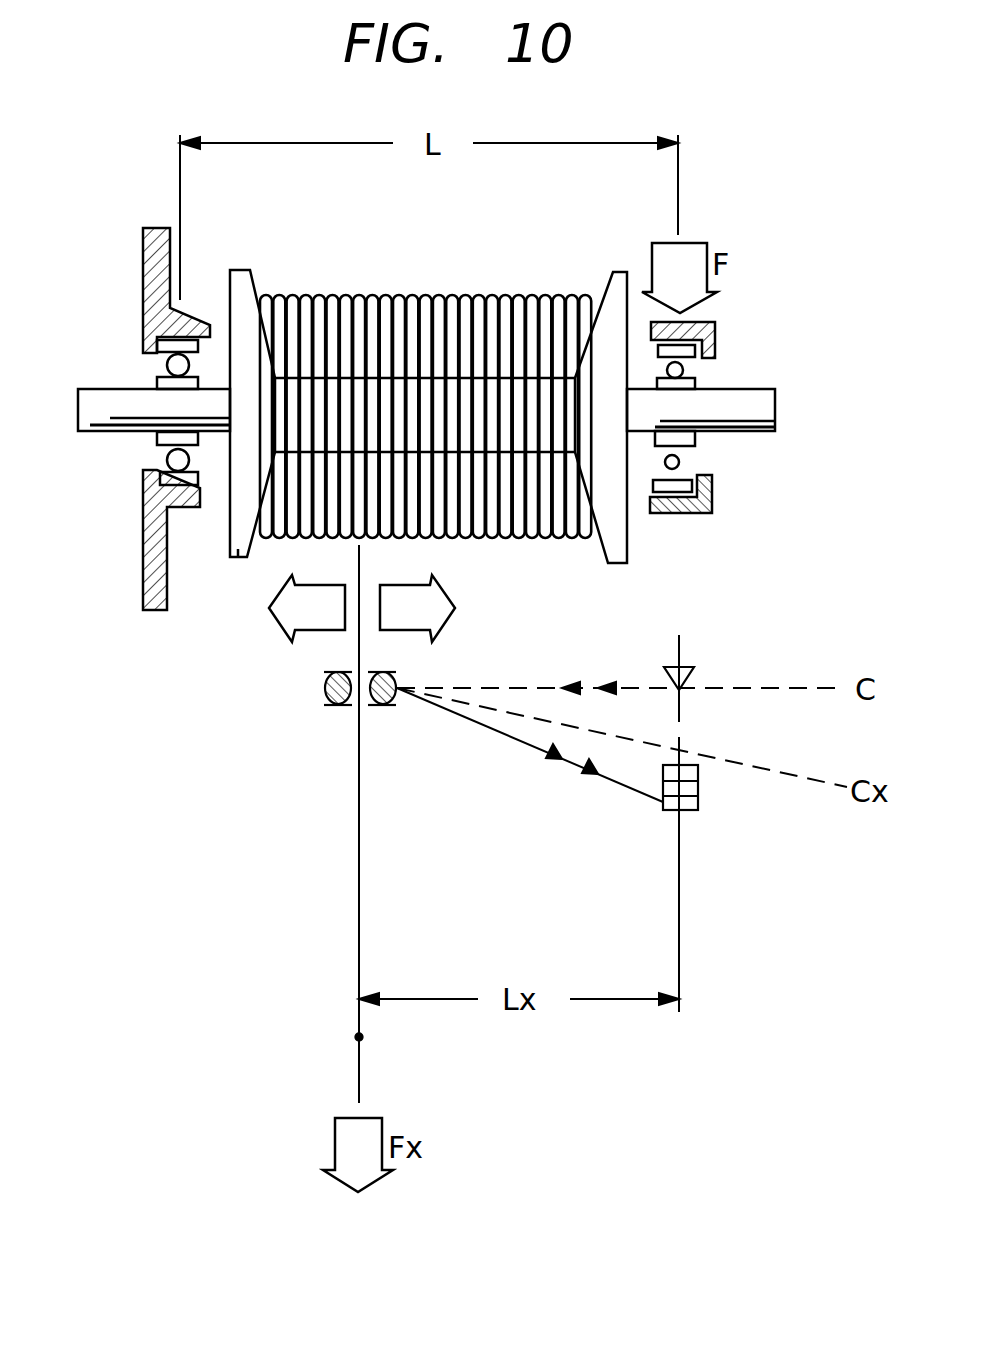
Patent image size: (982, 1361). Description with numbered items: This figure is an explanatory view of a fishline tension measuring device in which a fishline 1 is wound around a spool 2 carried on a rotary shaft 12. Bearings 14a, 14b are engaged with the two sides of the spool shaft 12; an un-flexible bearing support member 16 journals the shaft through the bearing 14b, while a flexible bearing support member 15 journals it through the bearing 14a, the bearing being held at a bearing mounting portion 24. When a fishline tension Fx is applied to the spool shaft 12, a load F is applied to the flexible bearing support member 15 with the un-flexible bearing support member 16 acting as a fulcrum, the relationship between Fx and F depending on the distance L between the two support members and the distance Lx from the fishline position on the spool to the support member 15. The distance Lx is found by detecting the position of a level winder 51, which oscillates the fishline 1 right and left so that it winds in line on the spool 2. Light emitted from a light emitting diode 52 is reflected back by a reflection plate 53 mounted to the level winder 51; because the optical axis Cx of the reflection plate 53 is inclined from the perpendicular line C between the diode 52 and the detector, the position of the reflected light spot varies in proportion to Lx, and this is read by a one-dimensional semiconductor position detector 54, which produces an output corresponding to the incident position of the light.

The fishline 1 is at (355, 1037).
The spool 2 is at (238, 557).
The rotary shaft 12 is at (760, 402).
The bearing 14a is at (700, 455).
The bearing 14b is at (157, 452).
The flexible bearing support member 15 is at (715, 333).
The un-flexible bearing support member 16 is at (143, 258).
The bearing mounting portion 24 is at (700, 513).
The level winder 51 is at (325, 692).
The light emitting diode 52 is at (695, 672).
The reflection plate 53 is at (398, 700).
The semiconductor position detector 54 is at (698, 790).